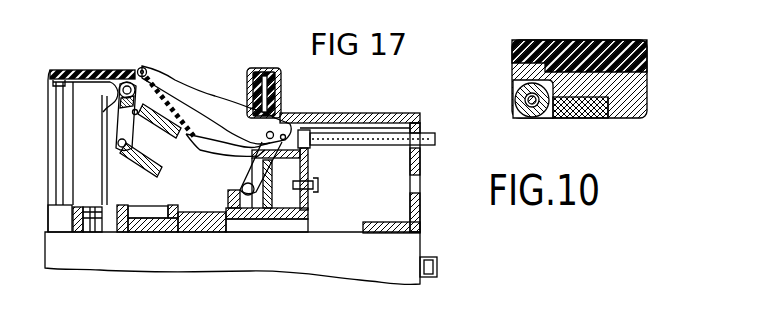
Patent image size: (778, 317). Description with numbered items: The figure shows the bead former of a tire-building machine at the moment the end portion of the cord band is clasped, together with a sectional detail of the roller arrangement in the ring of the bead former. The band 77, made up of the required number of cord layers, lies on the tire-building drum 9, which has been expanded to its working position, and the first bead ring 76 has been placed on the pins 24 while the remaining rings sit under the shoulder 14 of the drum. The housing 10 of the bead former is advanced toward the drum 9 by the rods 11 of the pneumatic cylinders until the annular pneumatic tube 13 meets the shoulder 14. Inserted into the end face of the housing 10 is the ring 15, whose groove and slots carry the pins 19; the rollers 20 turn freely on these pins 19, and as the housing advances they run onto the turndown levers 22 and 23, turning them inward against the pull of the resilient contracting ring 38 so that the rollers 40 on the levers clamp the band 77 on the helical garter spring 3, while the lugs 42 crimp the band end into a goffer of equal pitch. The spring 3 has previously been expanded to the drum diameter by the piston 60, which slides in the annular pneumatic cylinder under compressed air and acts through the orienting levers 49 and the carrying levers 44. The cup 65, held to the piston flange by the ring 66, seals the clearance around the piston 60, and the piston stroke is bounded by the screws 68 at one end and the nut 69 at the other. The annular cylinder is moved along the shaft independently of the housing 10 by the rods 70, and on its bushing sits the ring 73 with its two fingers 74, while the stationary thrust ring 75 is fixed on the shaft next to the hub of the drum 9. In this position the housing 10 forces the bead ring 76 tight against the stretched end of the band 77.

In FIG. 17, the helical garter spring 3 is at (130, 78).
In FIG. 17, the tire-building drum 9 is at (78, 126).
In FIG. 17, the housing 10 is at (272, 68).
In FIG. 10, the housing 10 is at (633, 108).
In FIG. 17, the rods 11 is at (425, 257).
In FIG. 17, the annular pneumatic tube 13 is at (258, 68).
In FIG. 10, the annular pneumatic tube 13 is at (522, 42).
In FIG. 17, the shoulder 14 is at (105, 70).
In FIG. 10, the ring 15 is at (569, 118).
In FIG. 10, the pins 19 is at (527, 100).
In FIG. 17, the rollers 20 is at (283, 113).
In FIG. 10, the rollers 20 is at (522, 118).
In FIG. 17, the turndown levers 22 is at (186, 95).
In FIG. 17, the turndown levers 23 is at (188, 75).
In FIG. 17, the pins 24 is at (242, 112).
In FIG. 17, the resilient contracting ring 38 is at (290, 130).
In FIG. 17, the rollers 40 is at (144, 67).
In FIG. 17, the lugs 42 is at (150, 173).
In FIG. 17, the carrying levers 44 is at (115, 99).
In FIG. 17, the orienting levers 49 is at (172, 173).
In FIG. 17, the piston 60 is at (221, 224).
In FIG. 17, the cup 65 is at (264, 212).
In FIG. 17, the ring 66 is at (275, 172).
In FIG. 17, the screws 68 is at (318, 186).
In FIG. 17, the nut 69 is at (174, 234).
In FIG. 17, the rods 70 is at (366, 133).
In FIG. 17, the ring 73 is at (120, 234).
In FIG. 17, the fingers 74 is at (95, 212).
In FIG. 17, the stationary thrust ring 75 is at (78, 234).
In FIG. 17, the bead ring 76 is at (232, 90).
In FIG. 17, the band 77 is at (70, 70).